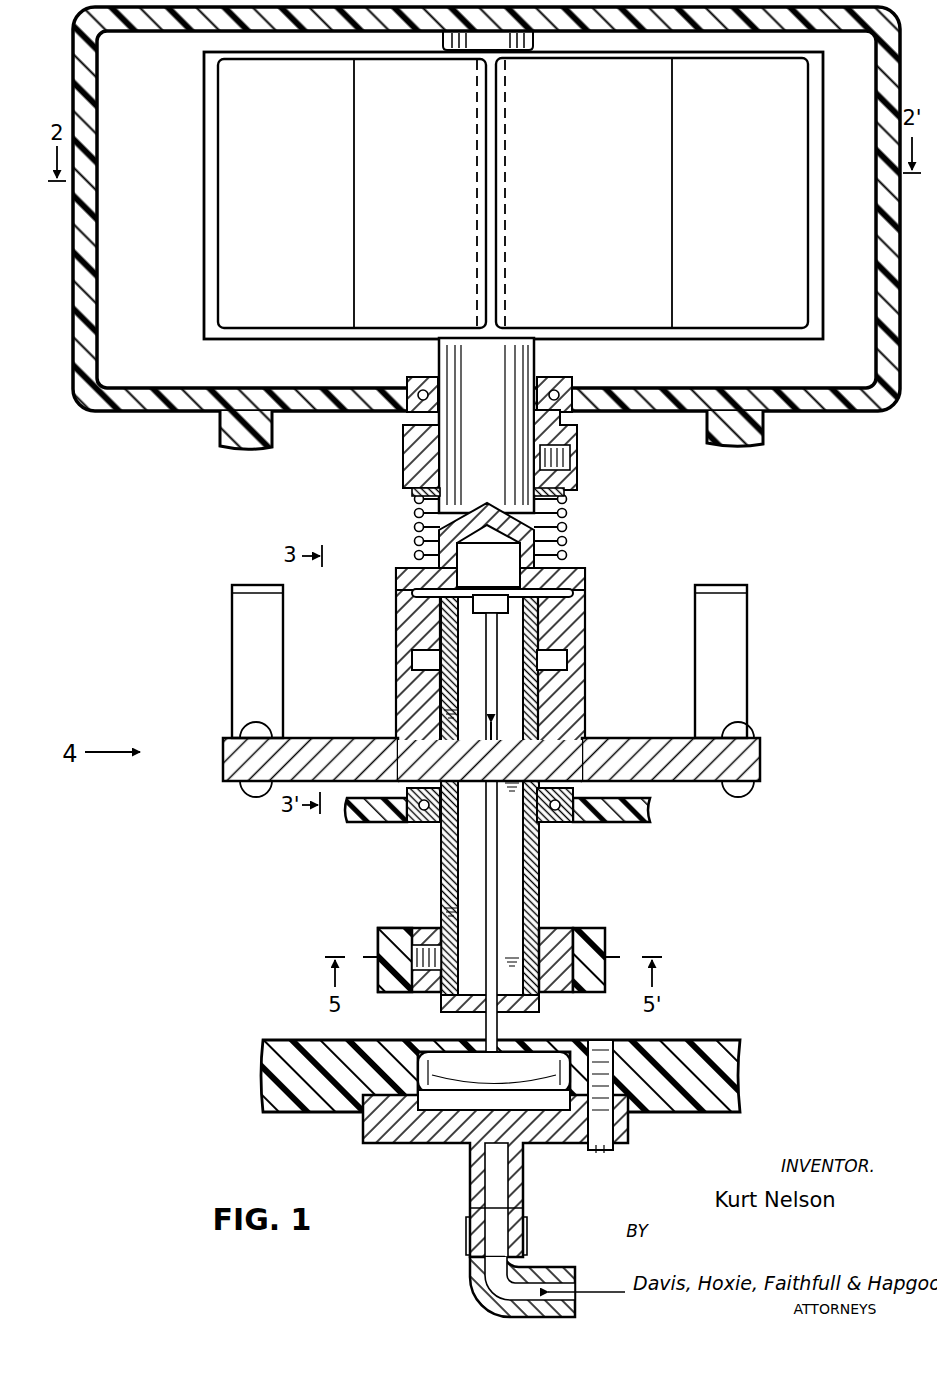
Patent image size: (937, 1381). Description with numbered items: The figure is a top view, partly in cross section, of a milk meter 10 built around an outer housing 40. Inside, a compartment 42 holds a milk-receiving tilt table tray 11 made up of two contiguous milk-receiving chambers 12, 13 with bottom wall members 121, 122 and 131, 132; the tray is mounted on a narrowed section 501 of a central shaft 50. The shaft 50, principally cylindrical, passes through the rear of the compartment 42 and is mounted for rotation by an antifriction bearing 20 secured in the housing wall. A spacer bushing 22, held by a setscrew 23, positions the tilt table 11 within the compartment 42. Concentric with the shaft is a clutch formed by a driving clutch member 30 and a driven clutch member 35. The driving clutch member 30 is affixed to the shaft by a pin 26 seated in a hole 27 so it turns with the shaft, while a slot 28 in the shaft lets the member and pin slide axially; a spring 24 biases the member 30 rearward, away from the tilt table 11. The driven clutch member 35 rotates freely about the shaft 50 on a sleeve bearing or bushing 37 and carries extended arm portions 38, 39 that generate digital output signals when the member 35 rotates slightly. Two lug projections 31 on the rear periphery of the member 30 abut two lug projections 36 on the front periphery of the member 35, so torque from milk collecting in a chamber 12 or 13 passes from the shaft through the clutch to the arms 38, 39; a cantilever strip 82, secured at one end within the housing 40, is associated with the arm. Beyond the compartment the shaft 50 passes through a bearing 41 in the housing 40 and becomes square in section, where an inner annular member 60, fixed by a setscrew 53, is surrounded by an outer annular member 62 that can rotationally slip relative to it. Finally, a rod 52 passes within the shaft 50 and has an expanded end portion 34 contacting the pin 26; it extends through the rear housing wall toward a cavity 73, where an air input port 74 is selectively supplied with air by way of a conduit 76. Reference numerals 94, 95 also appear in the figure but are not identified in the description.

The milk meter 10 is at (115, 572).
The milk-receiving tilt table tray 11 is at (203, 170).
The milk-receiving chamber 12 is at (692, 138).
The bottom wall member 121 is at (593, 196).
The bottom wall member 122 is at (788, 196).
The milk-receiving chamber 13 is at (372, 138).
The bottom wall member 131 is at (300, 196).
The bottom wall member 132 is at (432, 196).
The antifriction bearing 20 is at (422, 380).
The spacer bushing 22 is at (418, 465).
The setscrew 23 is at (563, 460).
The spring 24 is at (420, 505).
The pin 26 is at (565, 578).
The hole 27 is at (572, 593).
The slot 28 is at (488, 565).
The driving clutch member 30 is at (582, 632).
The lug projections 31 is at (410, 660).
The expanded end portion 34 is at (472, 602).
The driven clutch member 35 is at (572, 718).
The lug projections 36 is at (572, 668).
The sleeve bearing or bushing 37 is at (435, 702).
The extended arm portion 38 is at (752, 778).
The extended arm portion 39 is at (232, 768).
The outer housing 40 is at (98, 102).
The bearing 41 is at (421, 820).
The compartment 42 is at (697, 372).
The central shaft 50 is at (457, 432).
The narrowed section 501 is at (478, 240).
The rod 52 is at (505, 852).
The setscrew 53 is at (430, 940).
The inner annular member 60 is at (556, 945).
The outer annular member 62 is at (600, 943).
The cavity 73 is at (470, 1112).
The air input port 74 is at (470, 1210).
The conduit 76 is at (478, 1297).
The cantilever mechanical member or strip 82 is at (242, 615).
The left pivot pin 94 is at (258, 790).
The right pivot pin 95 is at (737, 790).